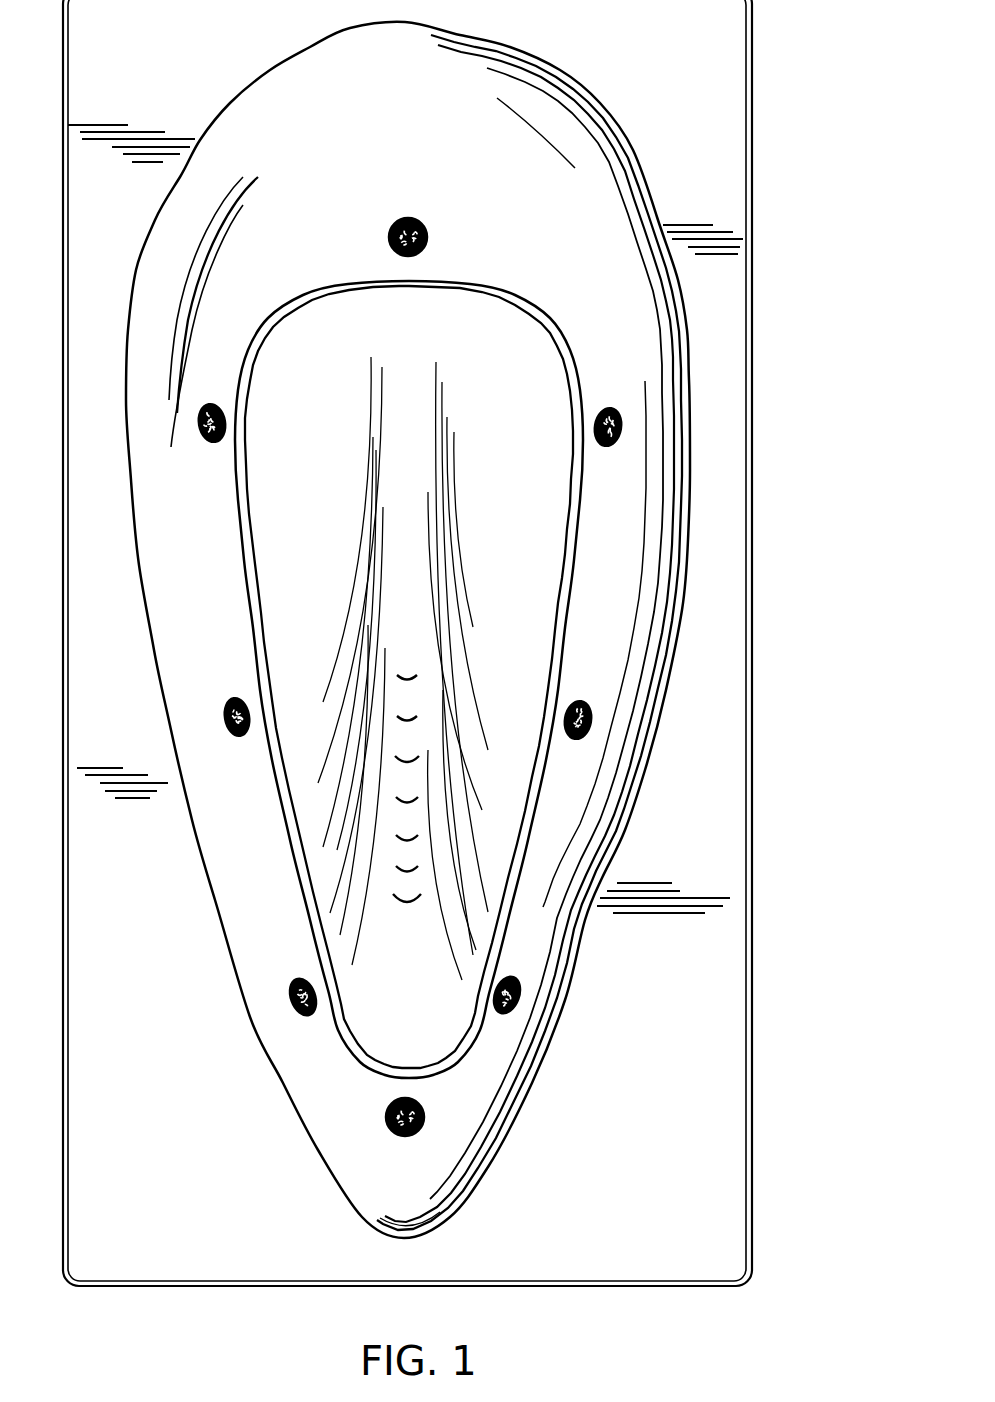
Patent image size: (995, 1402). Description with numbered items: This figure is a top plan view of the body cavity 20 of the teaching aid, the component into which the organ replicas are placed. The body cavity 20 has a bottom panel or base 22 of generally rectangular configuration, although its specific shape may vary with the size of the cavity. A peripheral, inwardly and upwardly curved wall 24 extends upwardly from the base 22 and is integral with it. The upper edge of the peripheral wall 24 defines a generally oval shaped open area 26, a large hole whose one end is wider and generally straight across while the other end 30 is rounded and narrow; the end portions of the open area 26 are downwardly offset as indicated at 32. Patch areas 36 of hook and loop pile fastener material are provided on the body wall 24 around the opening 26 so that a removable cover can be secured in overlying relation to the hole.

The body cavity 20 is at (758, 202).
The bottom panel or base 22 is at (717, 453).
The peripheral wall 24 is at (657, 558).
The open area 26 is at (562, 645).
The rounded narrow end 30 is at (405, 1072).
The downwardly offset end portions 32 is at (417, 283).
The patch areas 36 is at (590, 718).